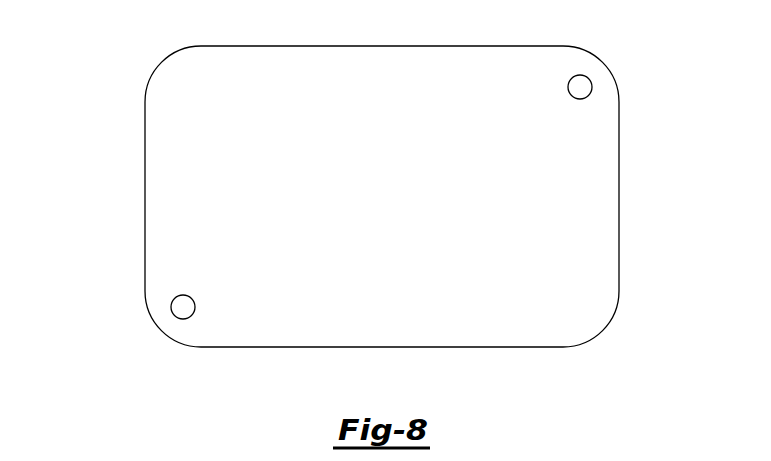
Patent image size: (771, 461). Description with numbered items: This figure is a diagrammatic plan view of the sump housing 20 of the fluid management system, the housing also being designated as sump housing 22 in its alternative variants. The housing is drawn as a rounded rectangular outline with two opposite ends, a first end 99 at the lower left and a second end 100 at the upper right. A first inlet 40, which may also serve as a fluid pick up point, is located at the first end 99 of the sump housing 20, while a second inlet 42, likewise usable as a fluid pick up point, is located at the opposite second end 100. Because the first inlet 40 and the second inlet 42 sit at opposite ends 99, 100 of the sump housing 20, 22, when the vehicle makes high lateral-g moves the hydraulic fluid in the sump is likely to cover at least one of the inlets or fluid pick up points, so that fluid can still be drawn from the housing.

The sump housing 20 is at (496, 347).
The sump housing 22 is at (590, 188).
The first inlet 40 is at (183, 307).
The second inlet 42 is at (580, 87).
The end of sump housing 99 is at (160, 328).
The end of sump housing 100 is at (600, 63).